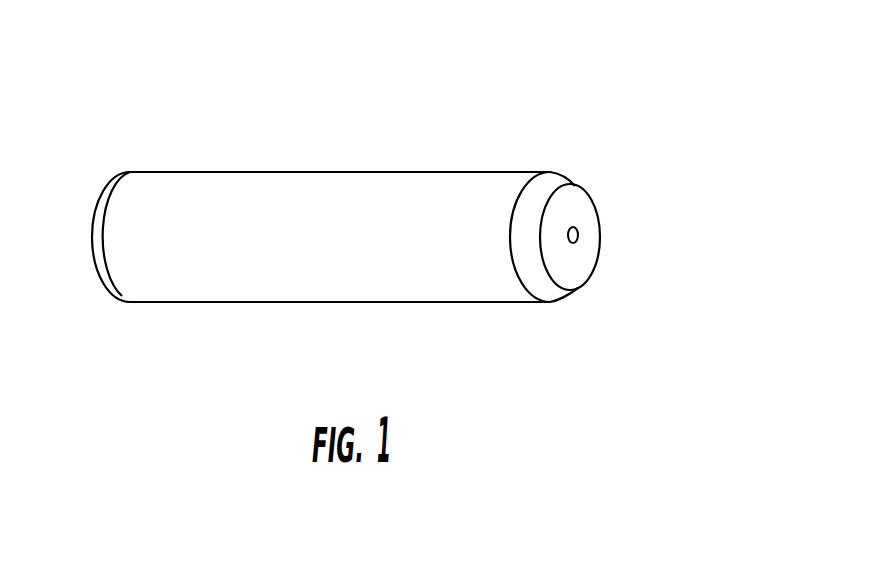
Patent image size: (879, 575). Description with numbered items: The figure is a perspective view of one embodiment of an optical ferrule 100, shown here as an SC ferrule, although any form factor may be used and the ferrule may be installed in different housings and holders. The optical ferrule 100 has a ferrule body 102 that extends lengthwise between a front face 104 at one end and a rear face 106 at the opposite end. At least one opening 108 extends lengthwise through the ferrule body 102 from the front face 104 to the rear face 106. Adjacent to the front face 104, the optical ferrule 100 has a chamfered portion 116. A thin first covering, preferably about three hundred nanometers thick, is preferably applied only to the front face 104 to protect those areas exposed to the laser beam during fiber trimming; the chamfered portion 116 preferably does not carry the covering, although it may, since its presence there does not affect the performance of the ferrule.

The optical ferrule 100 is at (526, 80).
The ferrule body 102 is at (477, 172).
The front face 104 is at (573, 282).
The rear face 106 is at (95, 262).
The opening 108 is at (579, 234).
The chamfered portion 116 is at (550, 303).